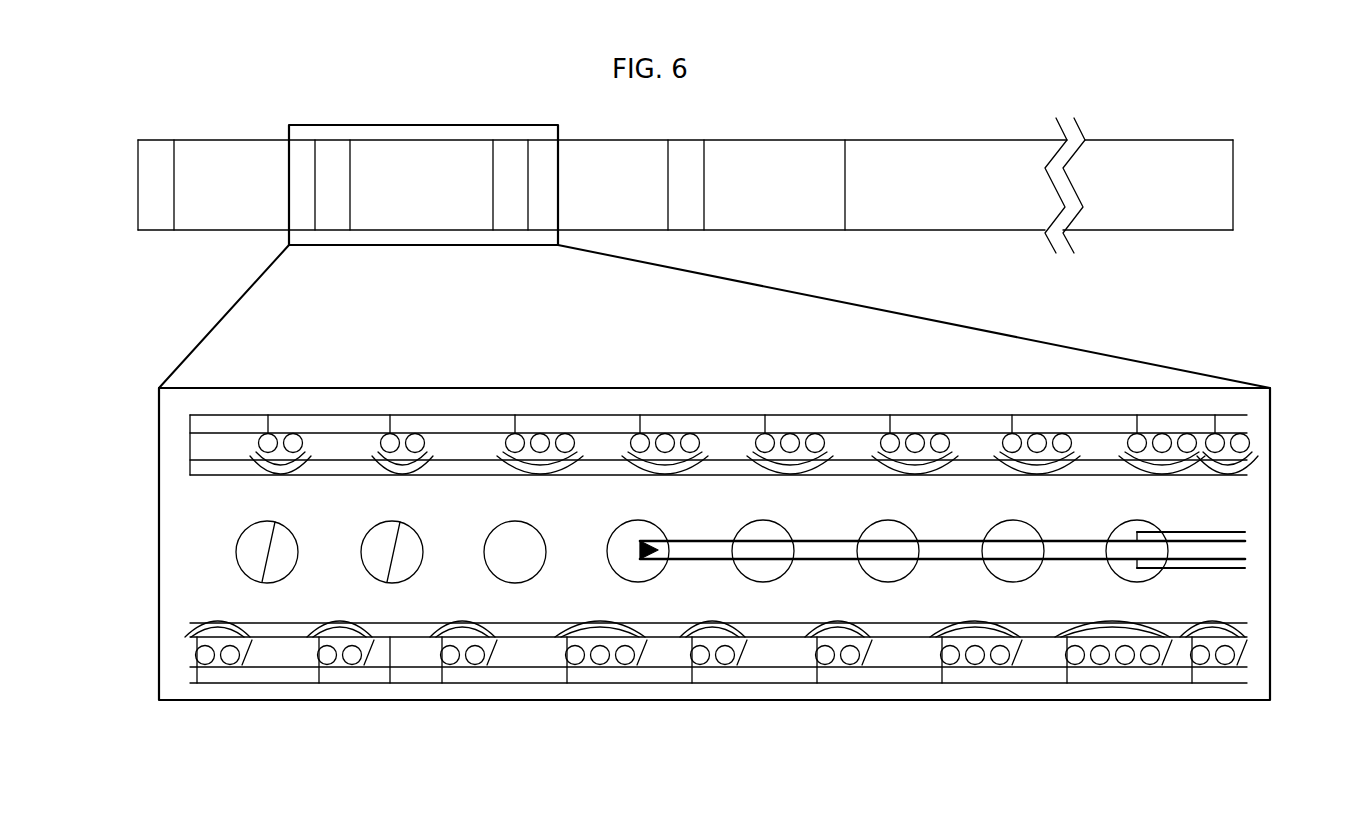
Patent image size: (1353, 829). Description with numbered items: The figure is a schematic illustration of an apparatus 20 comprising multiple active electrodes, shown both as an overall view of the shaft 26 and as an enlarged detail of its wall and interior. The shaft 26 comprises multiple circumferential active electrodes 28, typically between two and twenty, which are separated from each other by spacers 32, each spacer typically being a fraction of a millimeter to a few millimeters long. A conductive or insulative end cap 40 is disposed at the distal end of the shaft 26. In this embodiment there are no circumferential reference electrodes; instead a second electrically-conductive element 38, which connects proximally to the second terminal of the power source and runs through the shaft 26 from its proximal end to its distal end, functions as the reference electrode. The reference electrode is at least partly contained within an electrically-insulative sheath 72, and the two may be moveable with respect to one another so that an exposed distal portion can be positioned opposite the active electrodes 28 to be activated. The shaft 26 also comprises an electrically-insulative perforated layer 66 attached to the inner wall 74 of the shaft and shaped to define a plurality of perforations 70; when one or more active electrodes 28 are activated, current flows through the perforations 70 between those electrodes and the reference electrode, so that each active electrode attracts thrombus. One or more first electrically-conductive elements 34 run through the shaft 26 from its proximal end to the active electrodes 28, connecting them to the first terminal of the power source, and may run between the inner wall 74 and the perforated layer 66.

The apparatus 20 is at (1270, 124).
The shaft 26 is at (945, 140).
The circumferential active electrodes 28 is at (1207, 683).
The spacers 32 is at (340, 232).
The first electrically-conductive elements 34 is at (247, 450).
The second electrically-conductive element 38 is at (713, 562).
The end cap 40 is at (138, 190).
The perforated layer 66 is at (352, 541).
The perforations 70 is at (515, 552).
The sheath 72 is at (1213, 531).
The inner wall 74 is at (410, 655).